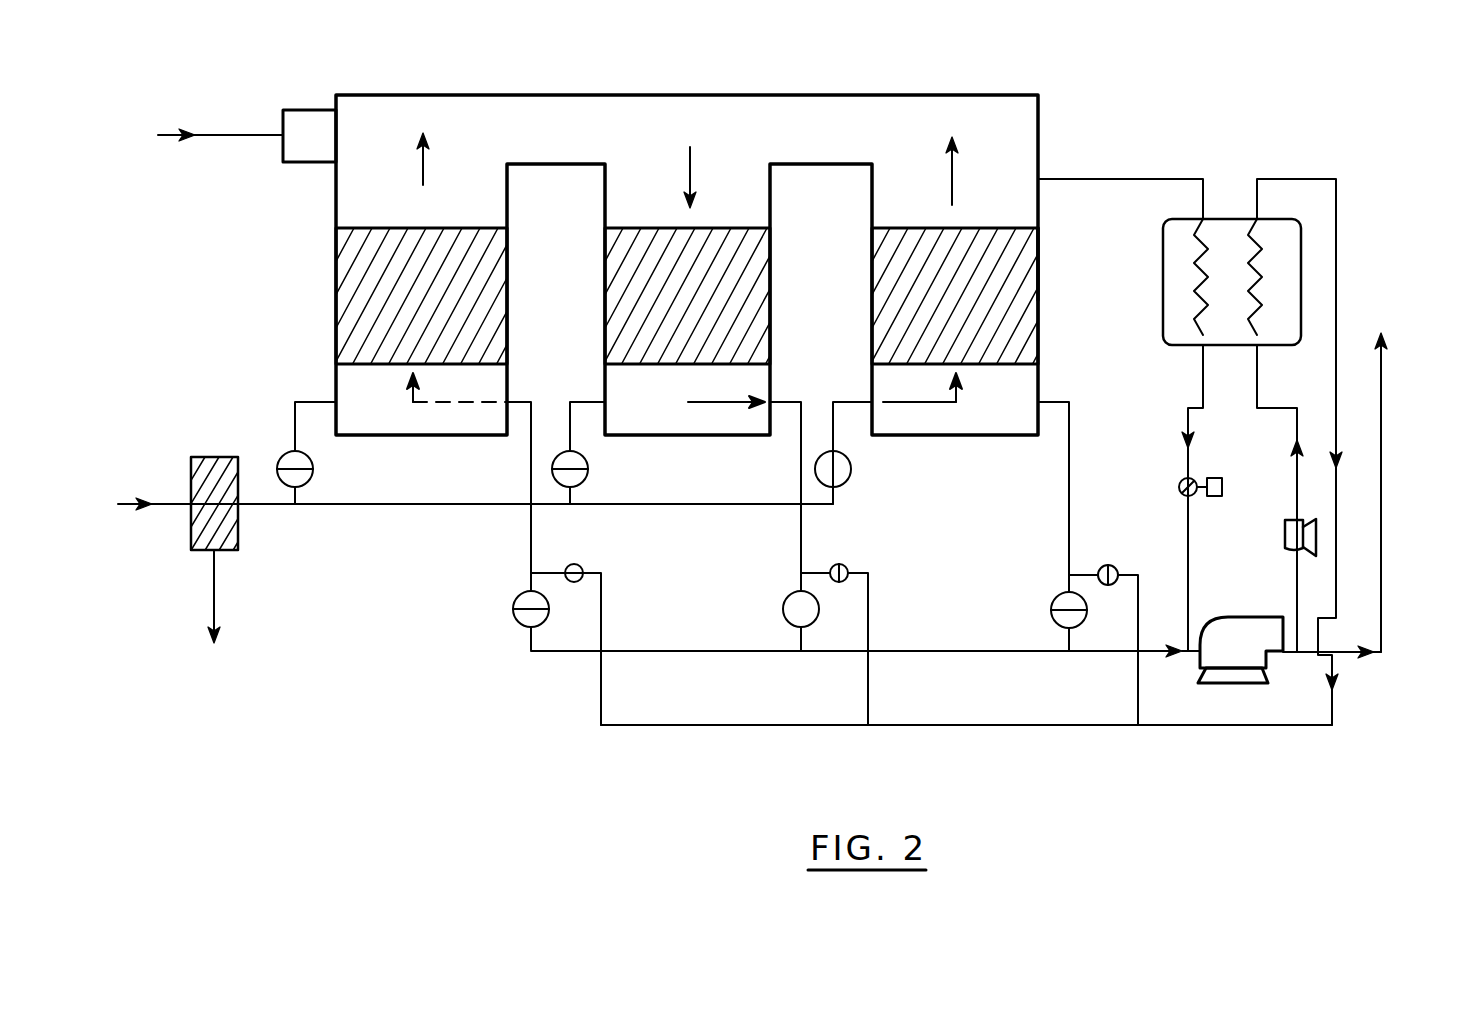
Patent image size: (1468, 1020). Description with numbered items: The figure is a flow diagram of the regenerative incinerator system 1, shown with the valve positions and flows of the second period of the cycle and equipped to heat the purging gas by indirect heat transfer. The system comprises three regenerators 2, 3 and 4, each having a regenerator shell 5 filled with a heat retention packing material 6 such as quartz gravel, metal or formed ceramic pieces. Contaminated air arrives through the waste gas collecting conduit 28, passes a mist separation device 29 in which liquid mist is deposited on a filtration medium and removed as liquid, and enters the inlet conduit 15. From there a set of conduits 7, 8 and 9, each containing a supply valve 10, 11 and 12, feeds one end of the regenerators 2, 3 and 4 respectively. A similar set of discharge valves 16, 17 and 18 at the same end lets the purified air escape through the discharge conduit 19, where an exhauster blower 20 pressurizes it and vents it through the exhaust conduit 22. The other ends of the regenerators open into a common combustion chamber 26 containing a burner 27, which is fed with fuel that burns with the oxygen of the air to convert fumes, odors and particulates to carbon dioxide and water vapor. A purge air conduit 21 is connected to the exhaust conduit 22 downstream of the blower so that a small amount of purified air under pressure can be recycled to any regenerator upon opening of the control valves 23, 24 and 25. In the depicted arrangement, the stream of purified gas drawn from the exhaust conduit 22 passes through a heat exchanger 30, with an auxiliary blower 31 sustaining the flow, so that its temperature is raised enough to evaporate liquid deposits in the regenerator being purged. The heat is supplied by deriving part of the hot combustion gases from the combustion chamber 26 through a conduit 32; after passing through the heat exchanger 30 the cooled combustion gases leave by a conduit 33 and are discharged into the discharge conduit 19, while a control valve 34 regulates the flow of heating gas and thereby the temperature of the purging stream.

The regenerative incinerator system 1 is at (1038, 157).
The first regenerator 2 is at (367, 248).
The second regenerator 3 is at (635, 246).
The third regenerator 4 is at (887, 250).
The regenerator shell 5 is at (1038, 253).
The heat retention packing material 6 is at (1010, 330).
The conduit 7 is at (295, 403).
The conduit 8 is at (582, 402).
The conduit 9 is at (848, 402).
The supply valve 10 is at (316, 469).
The supply valve 11 is at (590, 472).
The supply valve 12 is at (852, 472).
The inlet conduit 15 is at (357, 512).
The discharge valve 16 is at (513, 609).
The discharge valve 17 is at (783, 609).
The discharge valve 18 is at (1051, 610).
The discharge conduit 19 is at (1145, 642).
The exhauster blower 20 is at (1244, 616).
The purge air conduit 21 is at (1227, 728).
The exhaust conduit 22 is at (1385, 591).
The control valve 23 is at (582, 566).
The control valve 24 is at (848, 566).
The control valve 25 is at (1112, 566).
The combustion chamber 26 is at (573, 130).
The burner 27 is at (317, 125).
The waste gas collecting conduit 28 is at (155, 500).
The mist separation device 29 is at (238, 540).
The heat exchanger 30 is at (1163, 290).
The auxiliary blower 31 is at (1290, 520).
The conduit 32 is at (1190, 452).
The conduit 33 is at (1203, 383).
The control valve 34 is at (1183, 478).